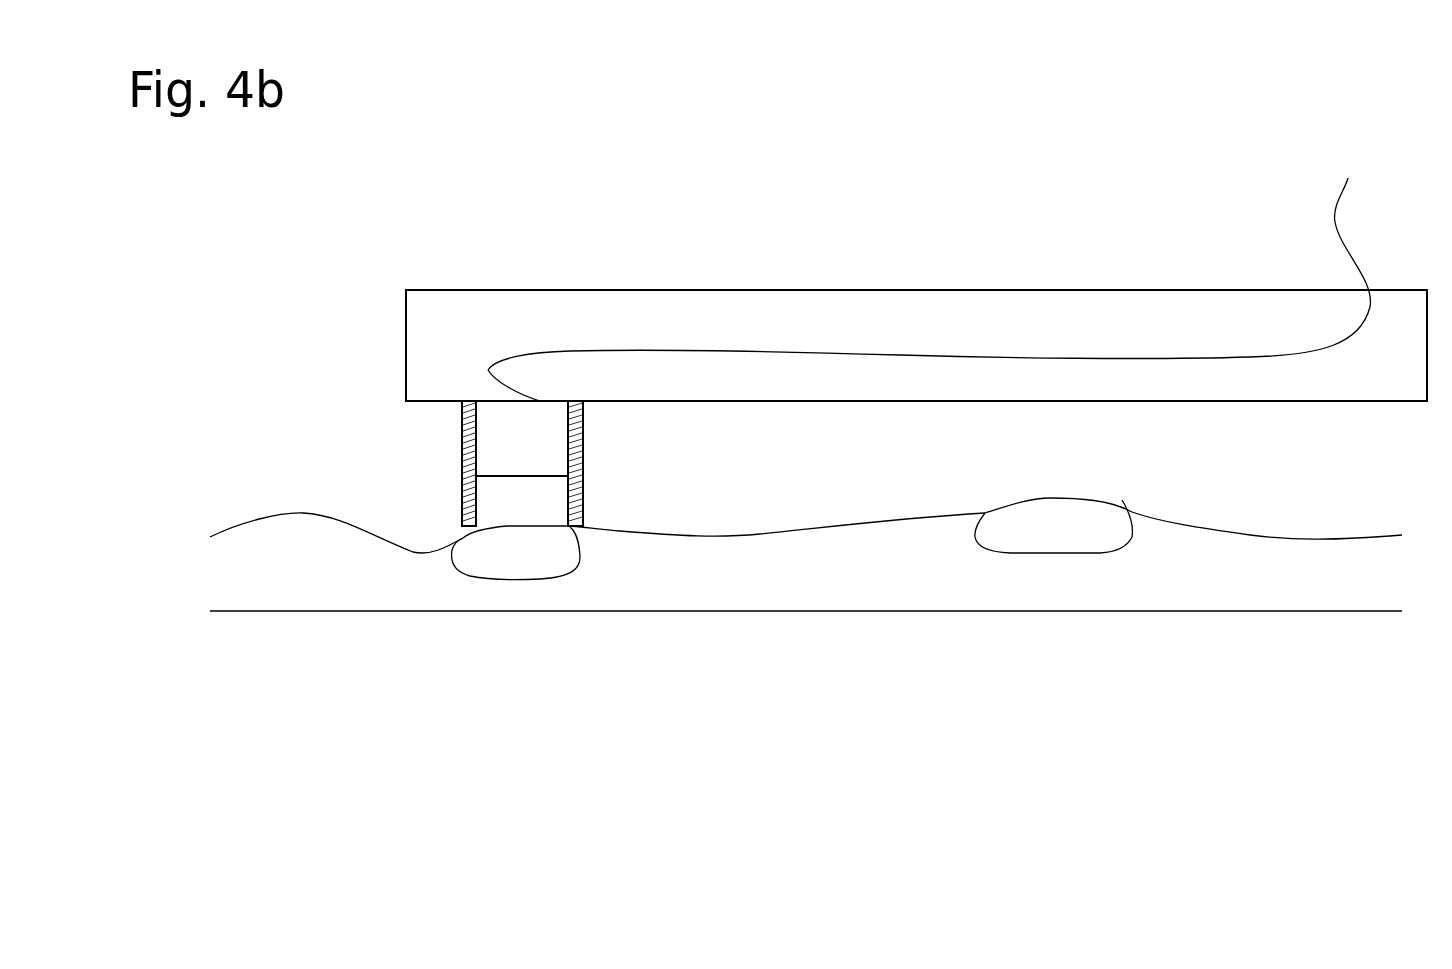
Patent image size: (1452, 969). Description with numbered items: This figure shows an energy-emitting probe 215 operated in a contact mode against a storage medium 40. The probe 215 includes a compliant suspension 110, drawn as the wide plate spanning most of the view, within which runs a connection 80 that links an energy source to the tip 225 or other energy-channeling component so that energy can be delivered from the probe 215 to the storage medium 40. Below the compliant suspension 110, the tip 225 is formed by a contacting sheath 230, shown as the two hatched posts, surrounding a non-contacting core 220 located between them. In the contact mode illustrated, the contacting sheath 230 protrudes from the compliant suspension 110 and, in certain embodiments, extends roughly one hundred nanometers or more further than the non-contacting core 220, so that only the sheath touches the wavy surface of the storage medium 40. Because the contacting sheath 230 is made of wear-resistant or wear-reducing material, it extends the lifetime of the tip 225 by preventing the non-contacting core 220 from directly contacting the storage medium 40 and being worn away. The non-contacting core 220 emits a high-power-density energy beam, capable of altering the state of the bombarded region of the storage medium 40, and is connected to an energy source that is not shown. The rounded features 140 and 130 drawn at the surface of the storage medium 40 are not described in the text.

The compliant suspension 110 is at (523, 312).
The connection 80 is at (892, 350).
The energy-emitting probe 215 is at (365, 313).
The contacting sheath 230 is at (583, 438).
The non-contacting core 220 is at (515, 452).
The tip 225 is at (420, 488).
The left droplet 140 is at (772, 549).
The right droplet 130 is at (528, 562).
The storage medium 40 is at (1175, 560).